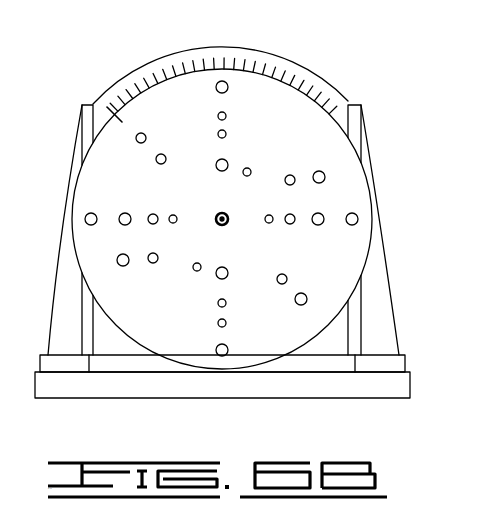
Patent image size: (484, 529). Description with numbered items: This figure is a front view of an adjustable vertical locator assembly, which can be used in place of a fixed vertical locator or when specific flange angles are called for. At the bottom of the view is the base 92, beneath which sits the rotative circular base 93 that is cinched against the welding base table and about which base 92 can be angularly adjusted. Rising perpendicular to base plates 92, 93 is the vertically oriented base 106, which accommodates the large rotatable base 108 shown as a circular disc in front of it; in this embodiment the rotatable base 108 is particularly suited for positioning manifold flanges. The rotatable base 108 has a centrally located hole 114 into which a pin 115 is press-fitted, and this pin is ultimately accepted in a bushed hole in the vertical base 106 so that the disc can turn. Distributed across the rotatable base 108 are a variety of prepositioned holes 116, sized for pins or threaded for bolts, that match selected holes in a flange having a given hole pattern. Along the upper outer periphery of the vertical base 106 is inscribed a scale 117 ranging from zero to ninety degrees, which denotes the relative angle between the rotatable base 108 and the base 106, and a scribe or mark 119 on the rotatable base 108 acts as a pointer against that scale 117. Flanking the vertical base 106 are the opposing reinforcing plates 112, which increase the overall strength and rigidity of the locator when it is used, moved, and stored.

The base 92 is at (406, 364).
The rotative circular base 93 is at (411, 388).
The vertically oriented base 106 is at (346, 101).
The rotatable base 108 is at (286, 145).
The reinforcing plates 112 is at (376, 283).
The centrally located hole 114 is at (226, 224).
The pin 115 is at (228, 216).
The prepositioned holes 116 is at (352, 219).
The scale 117 is at (279, 54).
The scribe or mark 119 is at (117, 114).